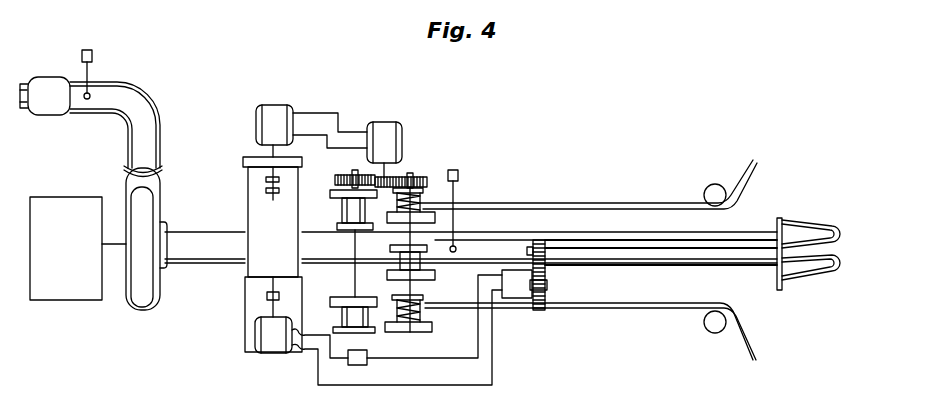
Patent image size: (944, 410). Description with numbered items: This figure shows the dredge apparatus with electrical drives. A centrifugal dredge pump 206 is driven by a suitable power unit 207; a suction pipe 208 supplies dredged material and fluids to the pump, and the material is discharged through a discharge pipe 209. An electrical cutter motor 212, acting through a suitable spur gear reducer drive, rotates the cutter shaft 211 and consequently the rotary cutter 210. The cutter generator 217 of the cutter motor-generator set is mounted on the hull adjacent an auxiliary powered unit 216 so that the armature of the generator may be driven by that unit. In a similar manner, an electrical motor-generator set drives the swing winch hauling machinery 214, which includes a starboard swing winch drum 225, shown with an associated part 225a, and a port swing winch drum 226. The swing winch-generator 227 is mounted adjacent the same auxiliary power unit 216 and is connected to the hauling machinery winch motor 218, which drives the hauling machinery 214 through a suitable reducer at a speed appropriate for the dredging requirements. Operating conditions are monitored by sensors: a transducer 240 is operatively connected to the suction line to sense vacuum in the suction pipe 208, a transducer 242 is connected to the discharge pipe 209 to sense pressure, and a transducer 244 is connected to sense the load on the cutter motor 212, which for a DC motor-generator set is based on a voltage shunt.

The dredge pump 206 is at (134, 310).
The power unit 207 is at (90, 262).
The suction pipe 208 is at (206, 258).
The discharge pipe 209 is at (143, 106).
The rotary cutter 210 is at (797, 284).
The cutter shaft 211 is at (622, 255).
The electrical motor 212 is at (518, 298).
The hauling machinery 214 is at (357, 281).
The auxiliary powered unit 216 is at (291, 243).
The cutter generator 217 is at (263, 353).
The hauling machinery winch motor 218 is at (381, 122).
The starboard swing winch drum 225 is at (421, 315).
The flange 225a is at (407, 333).
The port swing winch drum 226 is at (432, 248).
The swing winch-generator 227 is at (270, 105).
The transducer 240 is at (458, 176).
The transducer 242 is at (97, 53).
The transducer 244 is at (368, 363).